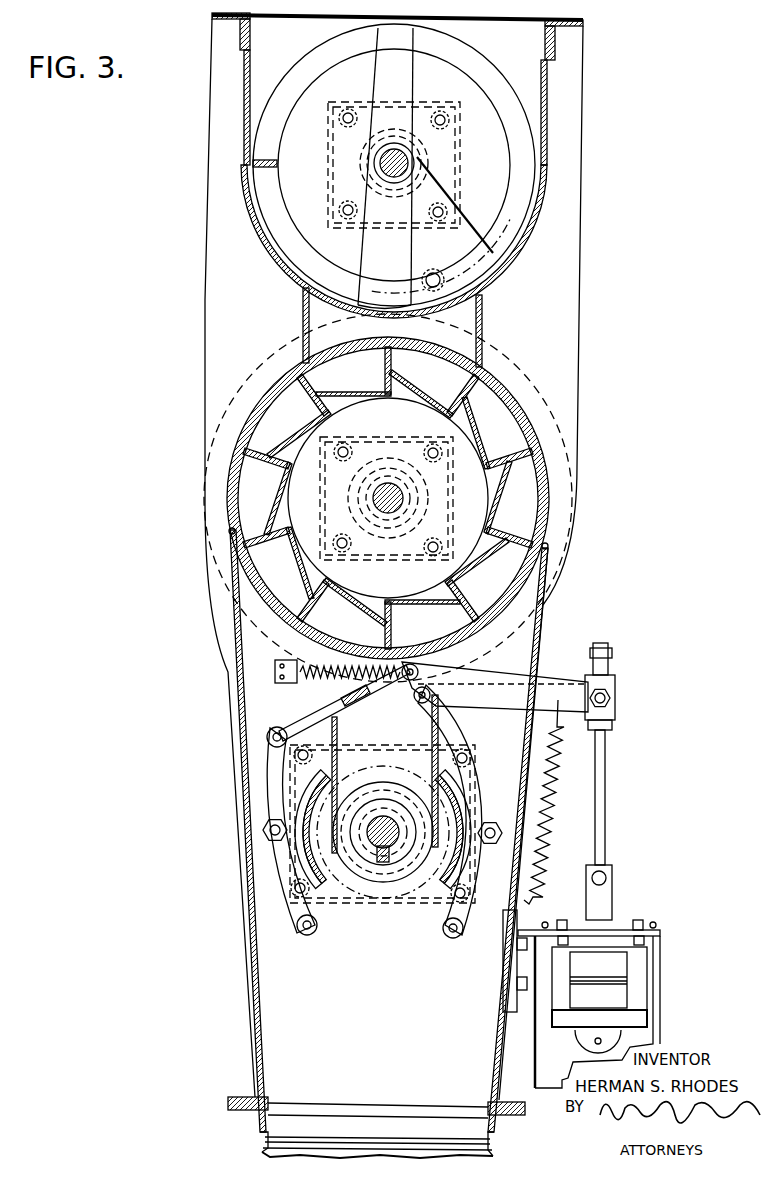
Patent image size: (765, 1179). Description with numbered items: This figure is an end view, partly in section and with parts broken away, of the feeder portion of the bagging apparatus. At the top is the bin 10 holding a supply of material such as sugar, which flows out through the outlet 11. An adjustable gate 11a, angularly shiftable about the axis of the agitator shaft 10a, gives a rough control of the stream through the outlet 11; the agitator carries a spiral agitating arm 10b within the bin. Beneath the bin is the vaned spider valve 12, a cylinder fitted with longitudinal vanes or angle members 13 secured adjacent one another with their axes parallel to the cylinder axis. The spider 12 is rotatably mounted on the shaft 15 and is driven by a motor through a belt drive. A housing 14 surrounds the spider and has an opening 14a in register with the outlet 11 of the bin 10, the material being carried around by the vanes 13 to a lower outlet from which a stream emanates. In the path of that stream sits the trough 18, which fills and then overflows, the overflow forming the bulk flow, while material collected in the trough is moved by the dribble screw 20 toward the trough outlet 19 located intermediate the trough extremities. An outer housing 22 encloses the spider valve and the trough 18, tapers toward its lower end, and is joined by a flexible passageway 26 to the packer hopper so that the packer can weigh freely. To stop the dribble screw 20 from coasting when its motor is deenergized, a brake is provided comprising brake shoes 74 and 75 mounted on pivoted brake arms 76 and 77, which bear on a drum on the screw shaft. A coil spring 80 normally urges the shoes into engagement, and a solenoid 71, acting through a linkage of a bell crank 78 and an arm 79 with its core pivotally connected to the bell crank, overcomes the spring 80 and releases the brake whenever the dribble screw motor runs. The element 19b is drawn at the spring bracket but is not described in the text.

The bin 10 is at (549, 70).
The agitator shaft 10a is at (415, 162).
The spiral agitating arm 10b is at (253, 163).
The outlet 11 is at (303, 293).
The adjustable gate 11a is at (483, 310).
The vaned spider valve 12 is at (300, 493).
The vanes 13 is at (470, 395).
The housing 14 is at (550, 528).
The housing opening 14a is at (497, 350).
The shaft 15 is at (402, 496).
The trough 18 is at (278, 742).
The trough outlet 19 is at (300, 862).
The return spring 19b is at (275, 668).
The dribble screw 20 is at (332, 788).
The outer housing 22 is at (205, 368).
The flexible passageway 26 is at (262, 1140).
The solenoid 71 is at (607, 995).
The brake shoe 74 is at (305, 812).
The brake shoe 75 is at (450, 800).
The brake arm 76 is at (297, 918).
The brake arm 77 is at (487, 877).
The bell crank 78 is at (550, 688).
The arm 79 is at (340, 706).
The coil spring 80 is at (557, 766).